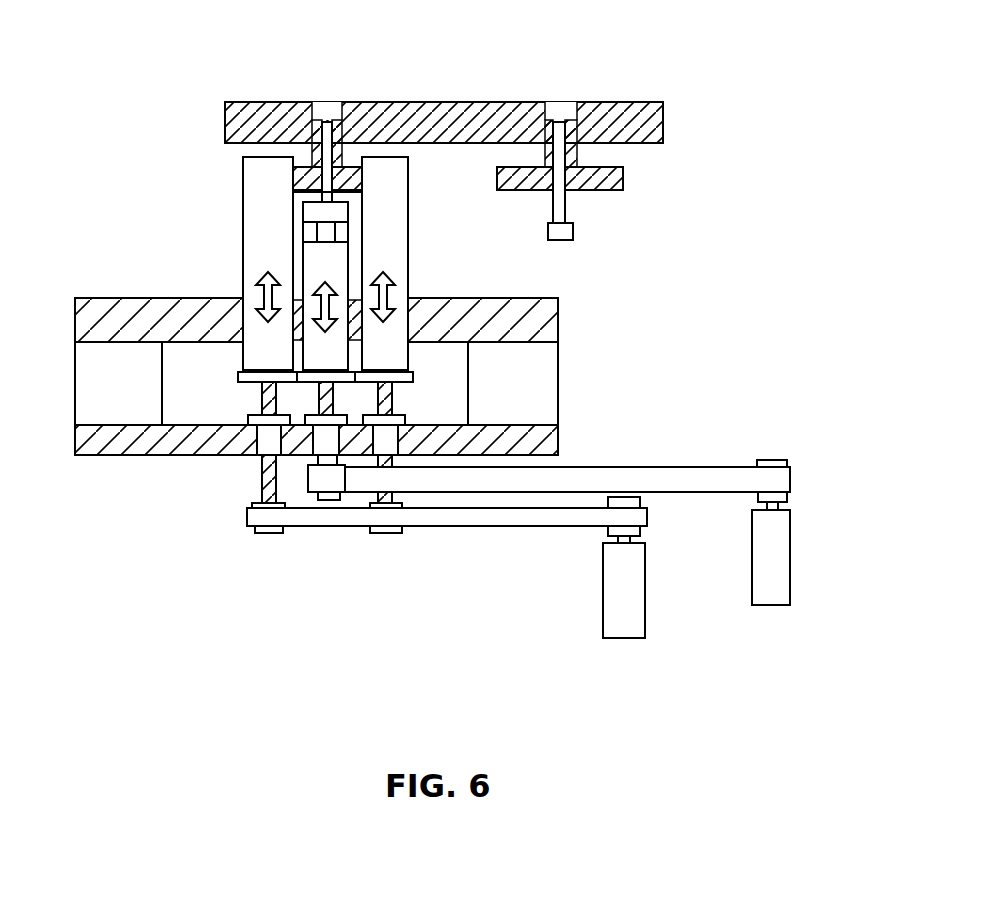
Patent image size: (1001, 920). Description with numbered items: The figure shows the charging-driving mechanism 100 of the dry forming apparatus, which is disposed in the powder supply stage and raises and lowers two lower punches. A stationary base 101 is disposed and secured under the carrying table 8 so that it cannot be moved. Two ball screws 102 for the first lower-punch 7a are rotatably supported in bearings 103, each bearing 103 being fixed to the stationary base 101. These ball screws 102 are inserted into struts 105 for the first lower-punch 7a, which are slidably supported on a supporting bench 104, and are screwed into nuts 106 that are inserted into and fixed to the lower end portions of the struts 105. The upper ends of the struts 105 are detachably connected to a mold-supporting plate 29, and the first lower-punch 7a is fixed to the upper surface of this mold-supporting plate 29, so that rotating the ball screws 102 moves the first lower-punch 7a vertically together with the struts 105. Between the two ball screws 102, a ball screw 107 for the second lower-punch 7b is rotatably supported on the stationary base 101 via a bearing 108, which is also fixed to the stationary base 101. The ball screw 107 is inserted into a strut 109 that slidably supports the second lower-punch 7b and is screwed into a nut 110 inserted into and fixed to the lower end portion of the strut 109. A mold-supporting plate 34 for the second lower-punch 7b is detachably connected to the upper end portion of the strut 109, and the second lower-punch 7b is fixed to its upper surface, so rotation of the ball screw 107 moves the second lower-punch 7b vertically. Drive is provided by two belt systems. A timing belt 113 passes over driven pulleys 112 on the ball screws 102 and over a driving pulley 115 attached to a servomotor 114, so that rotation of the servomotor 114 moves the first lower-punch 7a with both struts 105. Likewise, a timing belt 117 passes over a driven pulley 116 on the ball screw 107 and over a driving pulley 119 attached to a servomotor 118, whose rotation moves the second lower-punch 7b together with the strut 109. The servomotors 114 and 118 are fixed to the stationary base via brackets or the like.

The charging-driving mechanism 100 is at (165, 80).
The first lower-punch 7a is at (338, 158).
The second lower-punch 7b is at (328, 104).
The mold-supporting plate 29 is at (352, 178).
The carrying table 8 is at (616, 112).
The mold-supporting plate 34 is at (335, 234).
The strut 109 is at (342, 267).
The struts 105 is at (243, 233).
The nut 110 is at (458, 307).
The supporting bench 104 is at (550, 306).
The nuts 106 is at (240, 373).
The ball screws 102 is at (255, 398).
The ball screw 107 is at (400, 430).
The bearings 103 is at (248, 421).
The bearing 108 is at (535, 433).
The stationary base 101 is at (150, 455).
The driven pulleys 112 is at (262, 533).
The driven pulley 116 is at (325, 500).
The timing belt 113 is at (474, 517).
The driving pulley 115 is at (610, 530).
The servomotor 114 is at (637, 583).
The timing belt 117 is at (677, 483).
The servomotor 118 is at (790, 548).
The driving pulley 119 is at (787, 497).